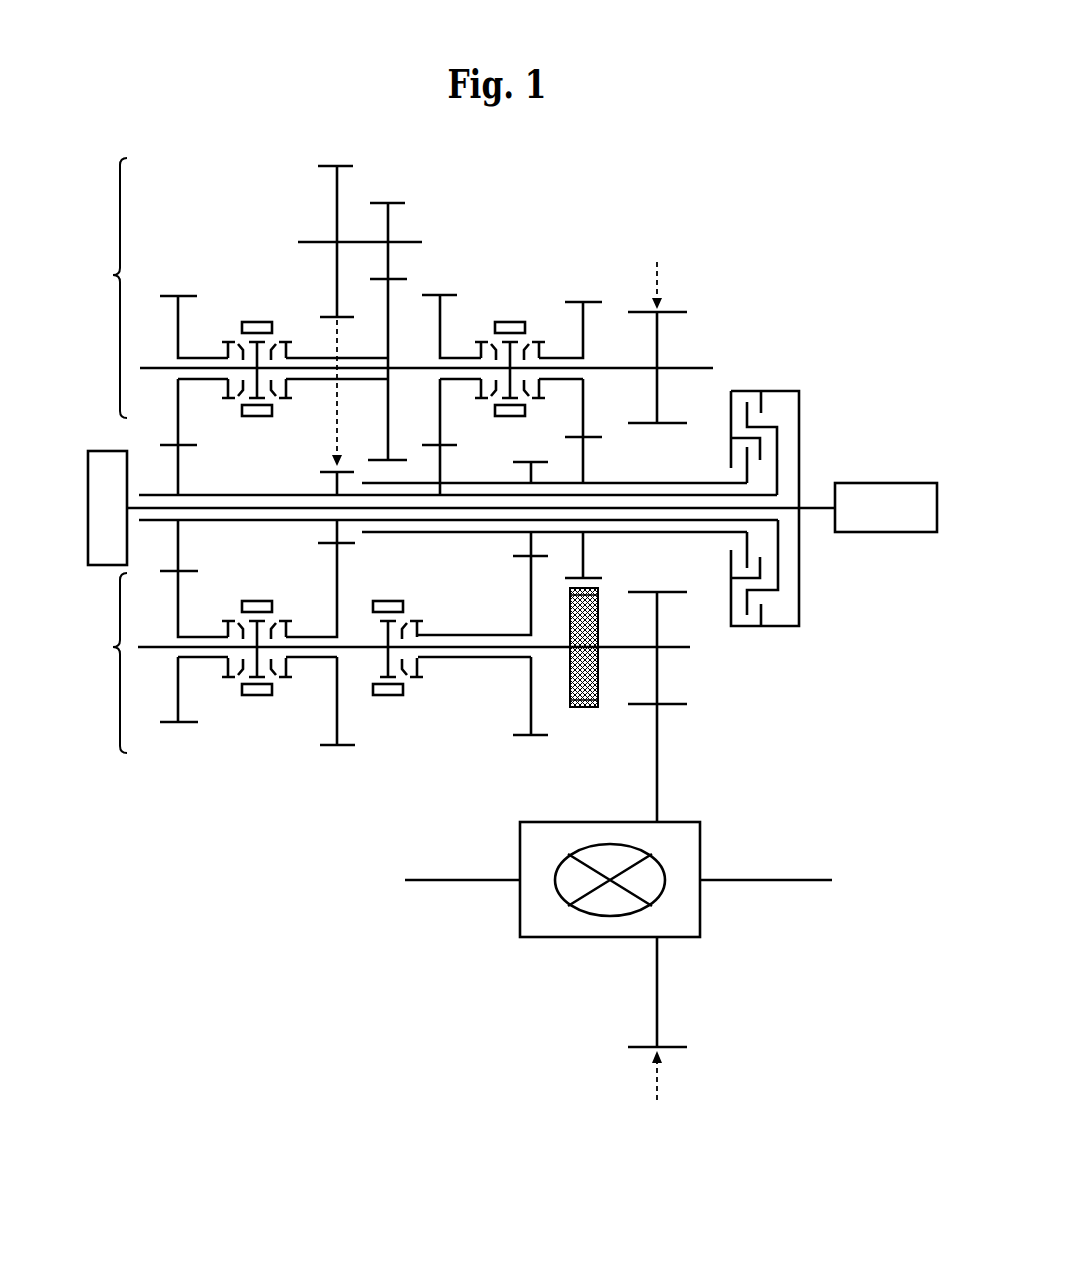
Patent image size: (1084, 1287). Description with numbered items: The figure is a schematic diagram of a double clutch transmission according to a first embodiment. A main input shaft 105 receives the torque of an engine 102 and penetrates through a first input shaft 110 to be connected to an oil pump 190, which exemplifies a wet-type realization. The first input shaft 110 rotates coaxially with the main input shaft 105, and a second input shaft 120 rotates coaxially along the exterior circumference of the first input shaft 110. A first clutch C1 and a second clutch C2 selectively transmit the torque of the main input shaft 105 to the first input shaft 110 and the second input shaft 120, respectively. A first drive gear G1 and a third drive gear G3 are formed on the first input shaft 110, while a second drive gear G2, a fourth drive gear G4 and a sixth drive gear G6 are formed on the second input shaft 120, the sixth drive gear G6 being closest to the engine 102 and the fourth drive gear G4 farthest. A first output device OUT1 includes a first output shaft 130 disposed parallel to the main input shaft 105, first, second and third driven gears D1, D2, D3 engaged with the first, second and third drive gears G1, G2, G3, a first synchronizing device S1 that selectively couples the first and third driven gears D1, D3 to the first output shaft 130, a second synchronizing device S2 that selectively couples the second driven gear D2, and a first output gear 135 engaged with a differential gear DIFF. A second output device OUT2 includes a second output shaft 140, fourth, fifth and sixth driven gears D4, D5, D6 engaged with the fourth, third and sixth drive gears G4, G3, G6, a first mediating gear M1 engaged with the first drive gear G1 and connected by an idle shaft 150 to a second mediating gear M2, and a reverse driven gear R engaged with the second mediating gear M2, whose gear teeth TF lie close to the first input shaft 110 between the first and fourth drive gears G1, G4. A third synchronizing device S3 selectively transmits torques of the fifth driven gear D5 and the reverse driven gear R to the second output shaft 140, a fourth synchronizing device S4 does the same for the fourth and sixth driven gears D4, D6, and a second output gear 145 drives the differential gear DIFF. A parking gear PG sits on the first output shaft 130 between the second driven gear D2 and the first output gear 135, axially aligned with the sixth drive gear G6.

The engine 102 is at (907, 472).
The main input shaft 105 is at (677, 511).
The first input shaft 110 is at (248, 493).
The second input shaft 120 is at (622, 534).
The first output shaft 130 is at (347, 650).
The second output shaft 140 is at (612, 367).
The second output gear 145 is at (660, 343).
The idle shaft 150 is at (348, 241).
The first output gear 135 is at (660, 672).
The oil pump 190 is at (93, 450).
The first mediating gear M1 is at (333, 188).
The second mediating gear M2 is at (389, 219).
The reverse driven gear R is at (389, 323).
The gear teeth TF is at (379, 470).
The first clutch C1 is at (752, 447).
The second clutch C2 is at (752, 407).
The first synchronizing device S1 is at (257, 662).
The second synchronizing device S2 is at (398, 661).
The third synchronizing device S3 is at (257, 356).
The fourth synchronizing device S4 is at (510, 356).
The first drive gear G1 is at (332, 533).
The second drive gear G2 is at (527, 546).
The third drive gear G3 is at (180, 536).
The fourth drive gear G4 is at (442, 452).
The sixth drive gear G6 is at (586, 453).
The first driven gear D1 is at (320, 719).
The second driven gear D2 is at (483, 667).
The third driven gear D3 is at (194, 706).
The fourth driven gear D4 is at (451, 383).
The fifth driven gear D5 is at (194, 383).
The sixth driven gear D6 is at (570, 378).
The parking gear PG is at (600, 696).
The differential gear DIFF is at (681, 781).
The first output device OUT1 is at (94, 663).
The second output device OUT2 is at (94, 288).